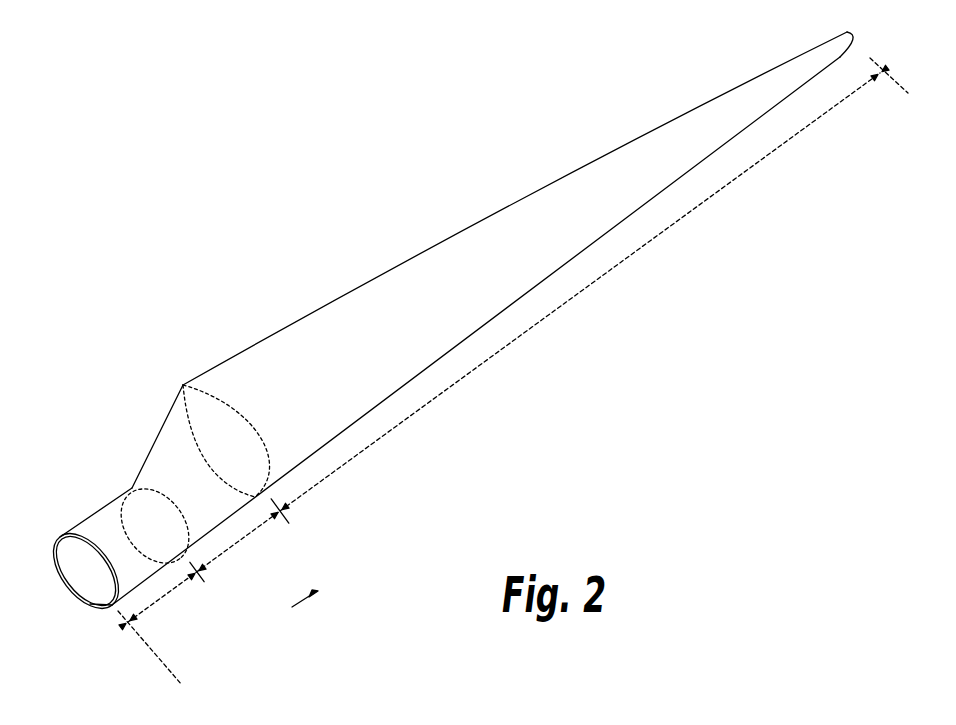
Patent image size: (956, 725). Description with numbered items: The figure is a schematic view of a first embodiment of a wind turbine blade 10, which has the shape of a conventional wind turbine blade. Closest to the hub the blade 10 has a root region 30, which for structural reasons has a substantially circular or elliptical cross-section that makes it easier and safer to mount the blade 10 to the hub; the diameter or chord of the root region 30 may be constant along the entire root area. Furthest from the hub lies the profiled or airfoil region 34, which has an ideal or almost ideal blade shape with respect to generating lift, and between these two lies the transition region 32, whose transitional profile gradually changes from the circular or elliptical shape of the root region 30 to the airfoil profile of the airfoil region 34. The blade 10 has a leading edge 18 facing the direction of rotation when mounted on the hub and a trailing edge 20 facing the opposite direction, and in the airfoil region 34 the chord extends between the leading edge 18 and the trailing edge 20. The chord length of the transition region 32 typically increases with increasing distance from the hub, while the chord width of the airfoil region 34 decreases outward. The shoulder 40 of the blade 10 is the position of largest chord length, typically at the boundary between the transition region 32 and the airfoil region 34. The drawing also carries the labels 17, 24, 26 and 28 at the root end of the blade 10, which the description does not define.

The wind turbine blade 10 is at (311, 211).
The blade root 17 is at (78, 560).
The leading edge 18 is at (610, 232).
The trailing edge 20 is at (507, 210).
The root section 24 is at (92, 524).
The root end face 26 is at (85, 603).
The root wall 28 is at (71, 532).
The root region 30 is at (165, 598).
The transition region 32 is at (242, 540).
The airfoil region 34 is at (523, 335).
The shoulder 40 is at (183, 385).